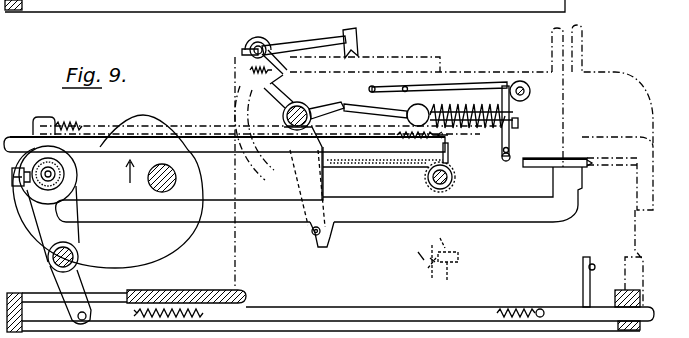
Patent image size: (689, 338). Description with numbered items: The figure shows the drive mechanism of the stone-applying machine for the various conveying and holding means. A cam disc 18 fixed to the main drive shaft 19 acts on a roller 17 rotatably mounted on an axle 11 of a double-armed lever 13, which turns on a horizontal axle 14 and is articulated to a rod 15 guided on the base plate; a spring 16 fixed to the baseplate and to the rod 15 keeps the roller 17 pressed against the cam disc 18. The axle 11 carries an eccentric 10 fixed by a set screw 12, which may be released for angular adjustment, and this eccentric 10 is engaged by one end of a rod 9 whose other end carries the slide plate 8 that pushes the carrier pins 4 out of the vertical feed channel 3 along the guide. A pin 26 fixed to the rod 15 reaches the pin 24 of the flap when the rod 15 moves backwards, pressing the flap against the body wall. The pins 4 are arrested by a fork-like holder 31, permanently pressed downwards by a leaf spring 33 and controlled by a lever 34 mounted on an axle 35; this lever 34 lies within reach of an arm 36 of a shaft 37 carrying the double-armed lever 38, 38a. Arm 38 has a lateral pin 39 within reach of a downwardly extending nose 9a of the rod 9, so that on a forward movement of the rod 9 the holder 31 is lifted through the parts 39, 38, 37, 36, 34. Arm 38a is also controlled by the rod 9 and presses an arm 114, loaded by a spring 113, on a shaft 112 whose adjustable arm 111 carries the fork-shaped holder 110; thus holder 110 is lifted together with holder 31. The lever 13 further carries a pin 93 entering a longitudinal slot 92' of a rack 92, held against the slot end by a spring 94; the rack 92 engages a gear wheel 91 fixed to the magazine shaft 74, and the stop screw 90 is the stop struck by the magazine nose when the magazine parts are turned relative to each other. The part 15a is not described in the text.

The vertical feed channel 3 is at (568, 65).
The longitudinal slot 92' is at (224, 124).
The pin 93 is at (75, 128).
The spring 94 is at (62, 124).
The roller 17 is at (77, 172).
The cam disc 18 is at (145, 113).
The main drive shaft 19 is at (167, 165).
The axle 11 is at (46, 182).
The set screw 12 is at (32, 186).
The eccentric 10 is at (40, 195).
The double-armed lever 13 is at (45, 230).
The horizontal axle 14 is at (53, 260).
The rod 9 is at (390, 224).
The nose 9a is at (328, 242).
The lateral pin 39 is at (310, 235).
The arm 38 is at (300, 180).
The arm 38a is at (272, 98).
The gear wheel 91 is at (455, 182).
The magazine shaft 74 is at (428, 179).
The rack 92 is at (379, 173).
The slide plate 8 is at (588, 164).
The shaft 112 is at (250, 42).
The adjustable arm 111 is at (307, 43).
The fork-shaped holder 110 is at (357, 38).
The arm 114 is at (282, 73).
The spring 113 is at (247, 72).
The shaft 37 is at (303, 101).
The arm 36 is at (323, 107).
The axle 35 is at (438, 101).
The lever 34 is at (380, 112).
The leaf spring 33 is at (482, 80).
The holder 31 is at (508, 152).
The carrier pin 4 is at (505, 162).
The stop screw 90 is at (456, 250).
The stop 15a is at (413, 253).
The rod 15 is at (325, 307).
The spring 16 is at (197, 292).
The pin 26 is at (583, 277).
The pin 24 is at (593, 265).